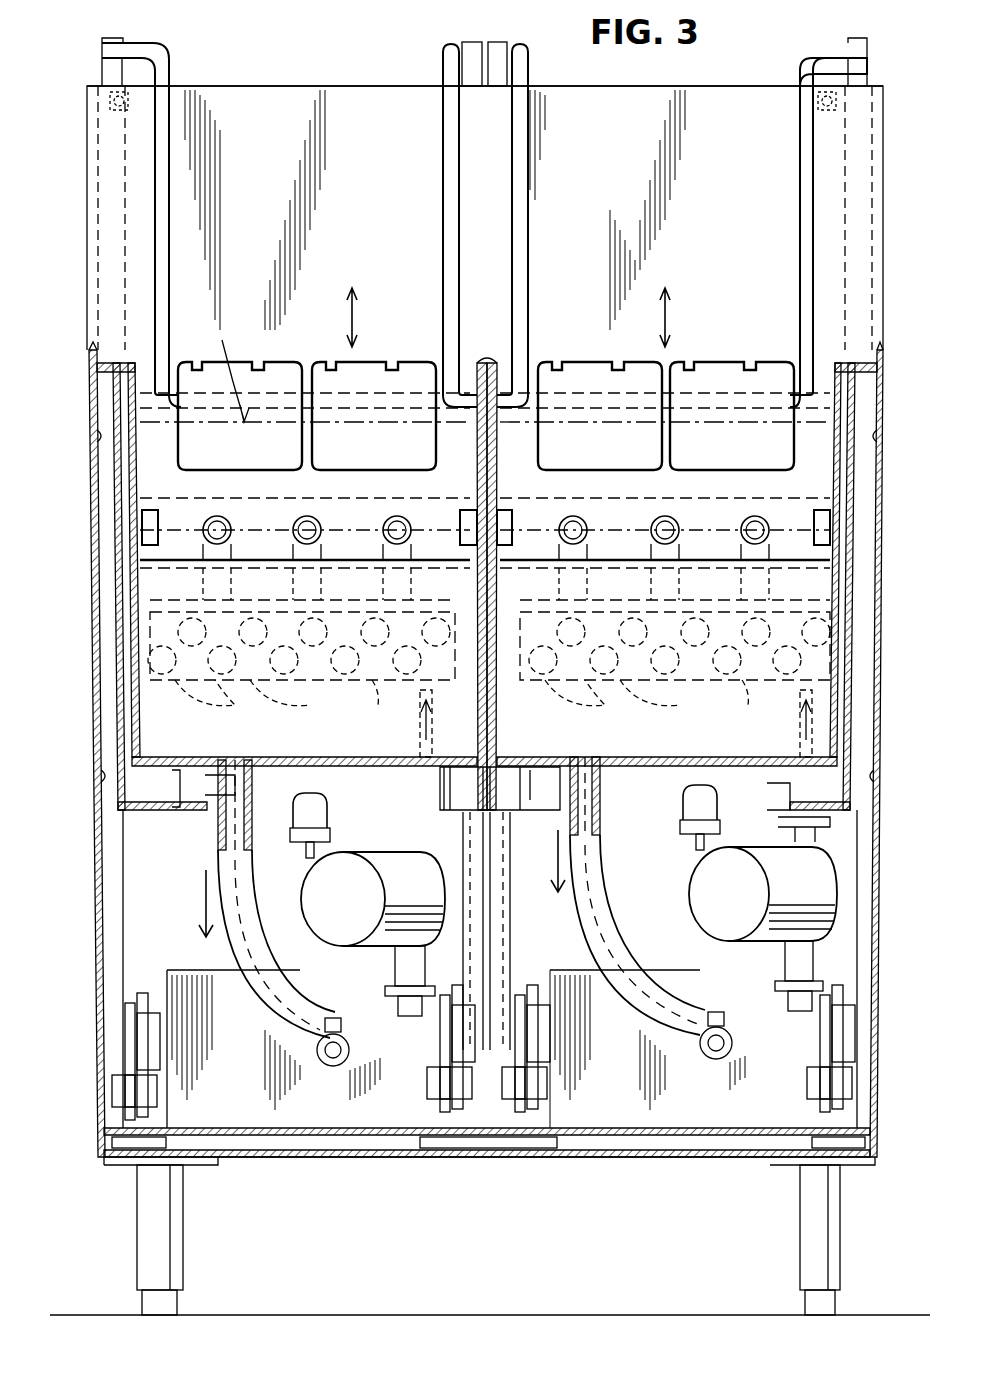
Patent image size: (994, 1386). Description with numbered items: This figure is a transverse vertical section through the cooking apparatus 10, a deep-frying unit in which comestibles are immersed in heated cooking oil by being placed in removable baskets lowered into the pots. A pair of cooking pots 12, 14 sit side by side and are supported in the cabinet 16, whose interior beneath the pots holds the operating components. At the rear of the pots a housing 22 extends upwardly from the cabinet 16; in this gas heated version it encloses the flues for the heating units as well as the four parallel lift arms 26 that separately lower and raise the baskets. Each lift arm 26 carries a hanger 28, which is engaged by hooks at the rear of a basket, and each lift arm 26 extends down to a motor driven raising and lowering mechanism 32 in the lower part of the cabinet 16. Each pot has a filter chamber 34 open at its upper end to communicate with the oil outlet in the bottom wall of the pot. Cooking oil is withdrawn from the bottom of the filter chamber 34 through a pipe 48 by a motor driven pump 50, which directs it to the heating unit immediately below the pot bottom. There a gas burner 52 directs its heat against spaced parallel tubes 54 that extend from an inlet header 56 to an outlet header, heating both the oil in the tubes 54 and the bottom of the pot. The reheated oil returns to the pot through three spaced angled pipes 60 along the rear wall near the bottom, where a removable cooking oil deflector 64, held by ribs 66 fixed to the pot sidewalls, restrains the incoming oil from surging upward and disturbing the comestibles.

The cooking apparatus 10 is at (313, 82).
The cooking pot 12 is at (150, 479).
The cooking pot 14 is at (815, 486).
The cabinet 16 is at (98, 572).
The housing 22 is at (95, 172).
The lift arms 26 is at (112, 70).
The hanger 28 is at (288, 373).
The motor driven raising and lowering mechanism 32 is at (200, 980).
The filter chamber 34 is at (160, 720).
The pipe 48 is at (232, 833).
The motor driven pump 50 is at (315, 877).
The burner 52 is at (374, 796).
The tubes 54 is at (238, 694).
The inlet header 56 is at (377, 685).
The angled pipes 60 is at (397, 518).
The cooking oil deflector 64 is at (288, 505).
The ribs 66 is at (152, 521).